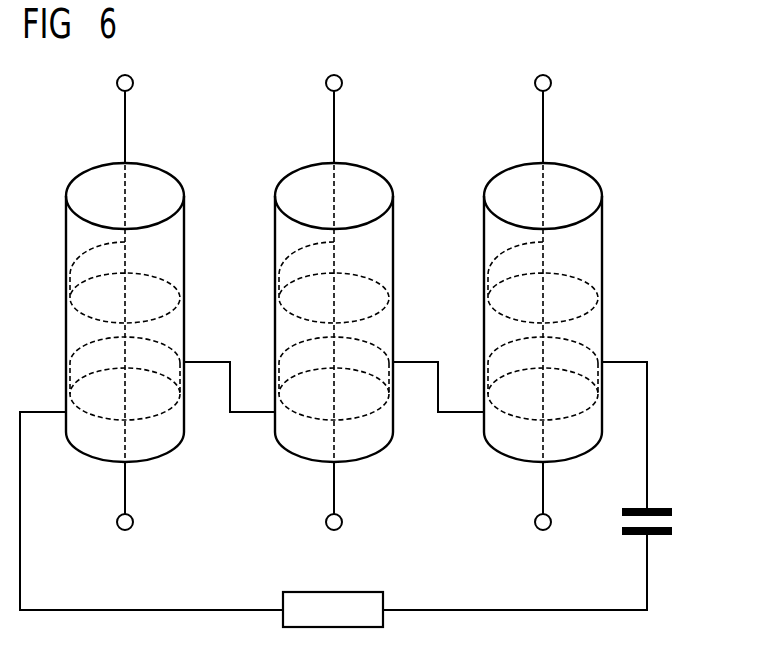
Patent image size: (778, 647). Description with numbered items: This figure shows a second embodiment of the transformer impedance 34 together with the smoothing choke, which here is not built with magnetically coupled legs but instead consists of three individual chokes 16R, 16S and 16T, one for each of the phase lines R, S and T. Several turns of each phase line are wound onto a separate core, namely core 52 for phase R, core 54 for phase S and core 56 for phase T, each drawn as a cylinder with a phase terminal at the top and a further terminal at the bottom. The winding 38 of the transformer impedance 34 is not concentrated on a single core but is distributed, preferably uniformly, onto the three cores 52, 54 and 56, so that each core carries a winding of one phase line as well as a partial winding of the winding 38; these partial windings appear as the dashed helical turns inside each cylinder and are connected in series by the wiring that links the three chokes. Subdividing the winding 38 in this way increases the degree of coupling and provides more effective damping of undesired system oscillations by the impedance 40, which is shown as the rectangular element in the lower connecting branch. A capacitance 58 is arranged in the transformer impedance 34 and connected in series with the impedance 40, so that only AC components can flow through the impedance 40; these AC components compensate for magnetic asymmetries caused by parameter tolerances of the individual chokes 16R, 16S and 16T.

The individual choke 16R is at (103, 346).
The individual choke 16S is at (331, 346).
The individual choke 16T is at (521, 346).
The core 52 is at (112, 150).
The core 54 is at (321, 150).
The core 56 is at (530, 150).
The transformer impedance 34 is at (240, 529).
The winding 38 is at (357, 420).
The impedance 40 is at (326, 592).
The capacitance 58 is at (663, 520).